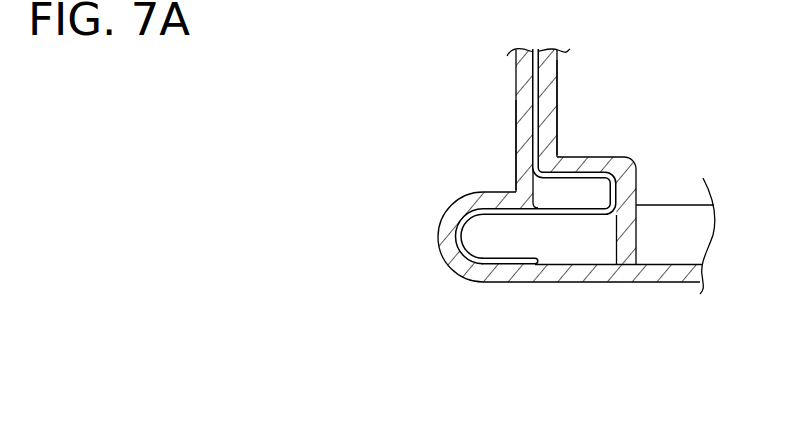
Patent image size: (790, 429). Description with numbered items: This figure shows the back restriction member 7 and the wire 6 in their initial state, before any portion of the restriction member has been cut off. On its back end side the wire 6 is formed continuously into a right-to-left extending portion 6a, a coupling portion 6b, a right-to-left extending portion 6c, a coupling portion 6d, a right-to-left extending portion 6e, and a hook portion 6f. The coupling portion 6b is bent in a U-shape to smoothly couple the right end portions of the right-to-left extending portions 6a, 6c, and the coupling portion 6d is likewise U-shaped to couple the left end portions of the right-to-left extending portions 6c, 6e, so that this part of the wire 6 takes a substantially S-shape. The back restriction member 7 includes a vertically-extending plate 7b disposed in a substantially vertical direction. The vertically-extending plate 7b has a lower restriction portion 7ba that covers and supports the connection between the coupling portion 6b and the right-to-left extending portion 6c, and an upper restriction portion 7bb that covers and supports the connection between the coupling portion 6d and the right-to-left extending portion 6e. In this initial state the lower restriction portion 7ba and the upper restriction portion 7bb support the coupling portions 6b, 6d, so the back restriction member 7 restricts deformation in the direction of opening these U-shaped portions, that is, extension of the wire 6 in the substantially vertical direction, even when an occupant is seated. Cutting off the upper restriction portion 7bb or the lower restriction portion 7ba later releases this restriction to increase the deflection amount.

The wire 6 is at (548, 204).
The right-to-left extending portion 6a is at (500, 262).
The coupling portion 6b is at (450, 235).
The right-to-left extending portion 6c is at (565, 215).
The coupling portion 6d is at (618, 191).
The right-to-left extending portion 6e is at (575, 178).
The hook portion 6f is at (540, 75).
The back restriction member 7 is at (400, 72).
The vertically-extending plate 7b is at (422, 95).
The lower restriction portion 7ba is at (493, 193).
The upper restriction portion 7bb is at (596, 165).